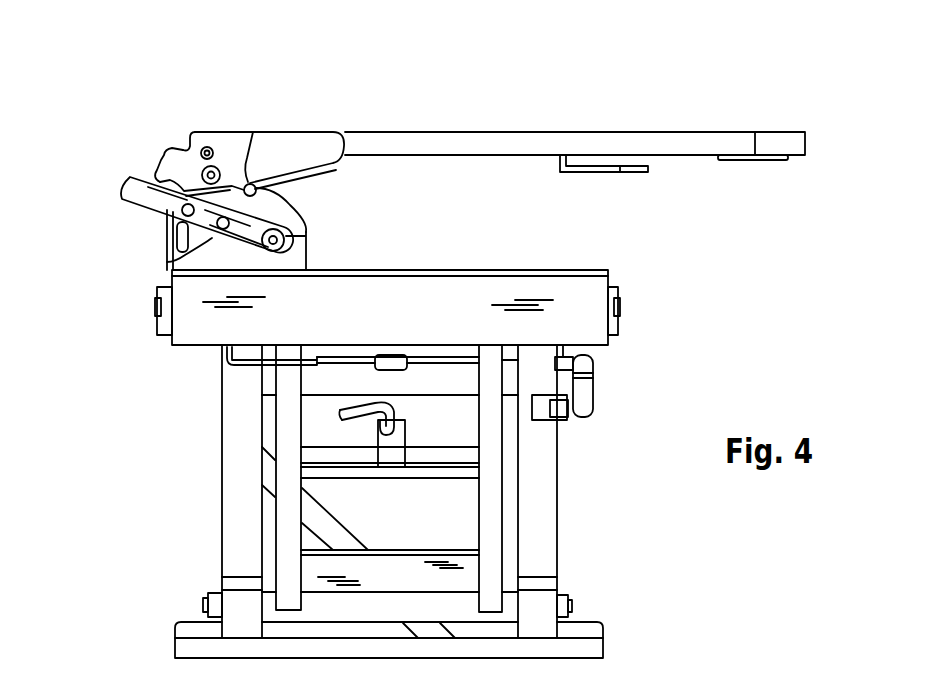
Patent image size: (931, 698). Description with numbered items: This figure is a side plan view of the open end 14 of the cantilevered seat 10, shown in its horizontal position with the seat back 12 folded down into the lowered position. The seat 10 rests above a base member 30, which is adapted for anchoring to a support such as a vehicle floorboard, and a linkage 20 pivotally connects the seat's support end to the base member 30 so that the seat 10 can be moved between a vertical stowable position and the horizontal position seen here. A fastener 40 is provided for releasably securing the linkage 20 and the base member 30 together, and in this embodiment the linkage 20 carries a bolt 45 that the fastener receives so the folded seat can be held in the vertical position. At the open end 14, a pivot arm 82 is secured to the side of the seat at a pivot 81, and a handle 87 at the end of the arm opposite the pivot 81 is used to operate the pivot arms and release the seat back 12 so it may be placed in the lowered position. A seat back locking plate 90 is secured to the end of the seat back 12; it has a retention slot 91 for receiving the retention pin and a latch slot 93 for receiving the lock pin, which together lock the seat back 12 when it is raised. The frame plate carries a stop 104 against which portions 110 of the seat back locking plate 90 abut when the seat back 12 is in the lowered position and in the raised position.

The cantilevered seat 10 is at (618, 280).
The seat back 12 is at (806, 145).
The open end 14 is at (410, 322).
The linkage 20 is at (503, 528).
The base member 30 is at (603, 637).
The fastener 40 is at (425, 423).
The bolt 45 is at (345, 413).
The pivot 81 is at (300, 260).
The pivot arm 82 is at (163, 255).
The handle 87 is at (130, 180).
The seat back locking plate 90 is at (325, 170).
The retention slot 91 is at (186, 152).
The latch slot 93 is at (158, 177).
The stop 104 is at (258, 191).
The portions 110 is at (248, 186).